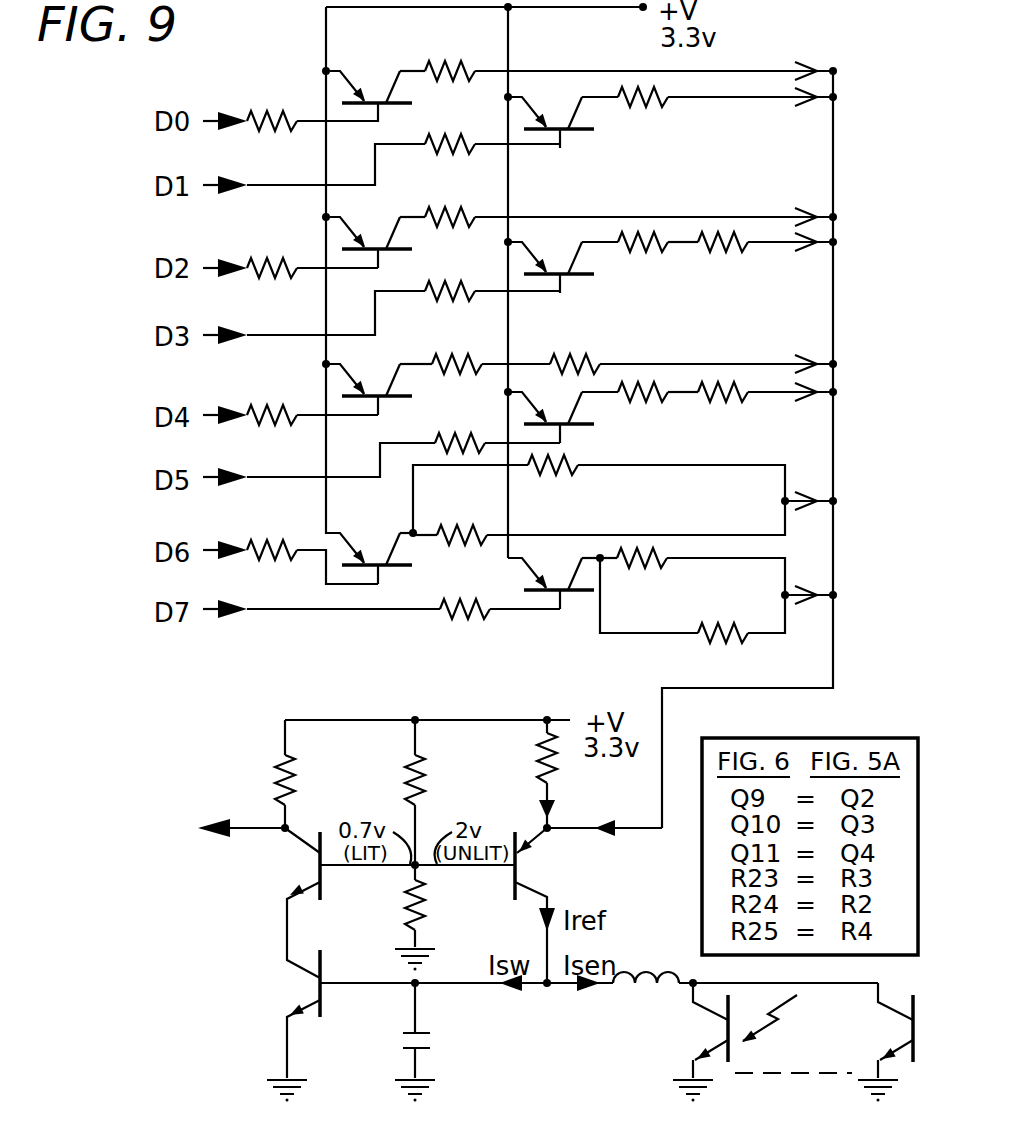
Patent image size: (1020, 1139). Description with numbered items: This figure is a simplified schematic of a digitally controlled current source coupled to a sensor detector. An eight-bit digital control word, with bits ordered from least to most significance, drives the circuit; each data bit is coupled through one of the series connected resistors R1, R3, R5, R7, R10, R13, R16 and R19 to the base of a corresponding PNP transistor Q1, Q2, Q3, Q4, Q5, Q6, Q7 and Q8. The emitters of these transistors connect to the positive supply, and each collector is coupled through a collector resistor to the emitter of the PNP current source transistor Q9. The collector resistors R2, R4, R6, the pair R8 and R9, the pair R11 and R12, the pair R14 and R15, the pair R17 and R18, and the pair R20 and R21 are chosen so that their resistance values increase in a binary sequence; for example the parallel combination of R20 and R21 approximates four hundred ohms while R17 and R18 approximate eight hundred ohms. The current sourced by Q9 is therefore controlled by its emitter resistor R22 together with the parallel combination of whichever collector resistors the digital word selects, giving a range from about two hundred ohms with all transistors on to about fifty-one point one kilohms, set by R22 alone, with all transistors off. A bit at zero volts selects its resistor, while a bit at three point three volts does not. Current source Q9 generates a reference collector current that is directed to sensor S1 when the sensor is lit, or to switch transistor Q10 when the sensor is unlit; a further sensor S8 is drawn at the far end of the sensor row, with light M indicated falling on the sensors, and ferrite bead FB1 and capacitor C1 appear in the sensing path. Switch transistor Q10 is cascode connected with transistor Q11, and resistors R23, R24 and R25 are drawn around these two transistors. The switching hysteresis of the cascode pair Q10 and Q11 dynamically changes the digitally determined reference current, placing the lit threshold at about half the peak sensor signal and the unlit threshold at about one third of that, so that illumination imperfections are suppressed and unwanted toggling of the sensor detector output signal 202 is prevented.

The series connected resistor R1 is at (307, 93).
The collector resistor R2 is at (621, 42).
The series connected resistor R3 is at (489, 117).
The collector resistor R4 is at (716, 128).
The series connected resistor R5 is at (307, 239).
The collector resistor R6 is at (621, 193).
The series connected resistor R7 is at (489, 265).
The collector resistor R8 is at (647, 272).
The collector resistor R9 is at (767, 272).
The series connected resistor R10 is at (307, 387).
The collector resistor R11 is at (488, 337).
The collector resistor R12 is at (682, 335).
The series connected resistor R13 is at (491, 416).
The collector resistor R14 is at (651, 422).
The collector resistor R15 is at (767, 422).
The series connected resistor R16 is at (310, 535).
The collector resistor R17 is at (451, 508).
The collector resistor R18 is at (625, 495).
The series connected resistor R19 is at (491, 582).
The collector resistor R20 is at (718, 590).
The collector resistor R21 is at (687, 600).
The emitter resistor R22 is at (500, 776).
The resistor 7.5K R23 is at (380, 918).
The resistor 4.7K R24 is at (369, 794).
The resistor 4.7K R25 is at (244, 776).
The PNP transistor Q1 is at (373, 92).
The PNP transistor Q2 is at (561, 115).
The PNP transistor Q3 is at (373, 238).
The PNP transistor Q4 is at (561, 262).
The PNP transistor Q5 is at (377, 385).
The PNP transistor Q6 is at (561, 413).
The PNP transistor Q7 is at (371, 552).
The PNP transistor Q8 is at (556, 576).
The PNP transistor current source Q9 is at (543, 907).
The switch transistor Q10 is at (334, 1026).
The cascode connected transistor Q11 is at (335, 903).
The capacitor 100nF C1 is at (372, 1042).
The ferrite bead FB1 is at (646, 999).
The sensor S1 is at (699, 1042).
The switch transistor segment 8 S8 is at (885, 1042).
The motor / multiplexed segments M is at (775, 1018).
The sensor detector output signal 202 is at (241, 846).